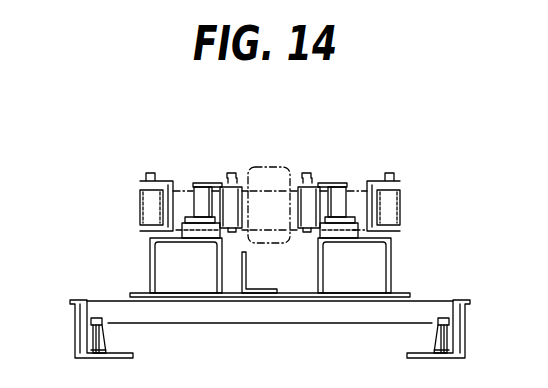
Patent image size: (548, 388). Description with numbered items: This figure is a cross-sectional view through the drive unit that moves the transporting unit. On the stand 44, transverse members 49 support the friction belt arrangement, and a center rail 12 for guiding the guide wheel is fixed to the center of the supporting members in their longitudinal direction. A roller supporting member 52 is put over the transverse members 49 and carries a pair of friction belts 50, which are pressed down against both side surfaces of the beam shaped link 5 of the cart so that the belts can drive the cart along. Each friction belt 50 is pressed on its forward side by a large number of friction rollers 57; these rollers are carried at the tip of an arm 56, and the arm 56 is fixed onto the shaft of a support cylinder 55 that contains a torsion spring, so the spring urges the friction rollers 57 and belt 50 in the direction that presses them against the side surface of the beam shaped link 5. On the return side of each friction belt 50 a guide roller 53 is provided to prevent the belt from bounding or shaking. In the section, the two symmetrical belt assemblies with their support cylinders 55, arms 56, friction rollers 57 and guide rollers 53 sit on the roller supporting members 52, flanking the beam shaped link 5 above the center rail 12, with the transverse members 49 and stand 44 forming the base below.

The beam shaped link 5 is at (273, 190).
The center rail 12 is at (242, 278).
The stand 44 is at (462, 333).
The transverse member 49 is at (103, 303).
The friction belt 50 is at (355, 190).
The roller supporting member 52 is at (150, 257).
The guide roller 53 is at (150, 203).
The support cylinder 55 is at (198, 203).
The arm 56 is at (211, 176).
The friction roller 57 is at (240, 192).